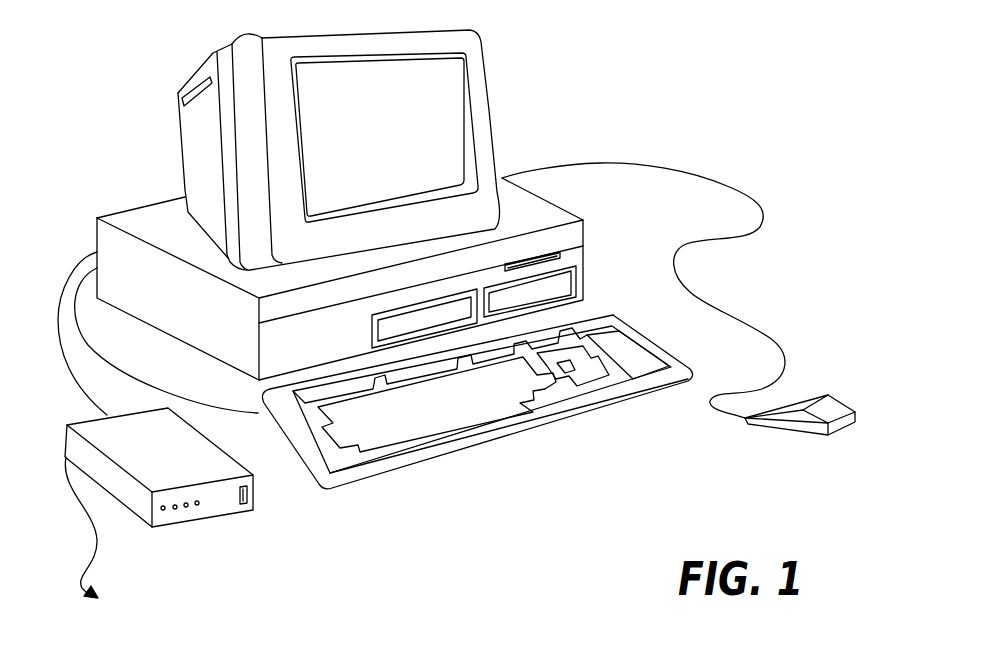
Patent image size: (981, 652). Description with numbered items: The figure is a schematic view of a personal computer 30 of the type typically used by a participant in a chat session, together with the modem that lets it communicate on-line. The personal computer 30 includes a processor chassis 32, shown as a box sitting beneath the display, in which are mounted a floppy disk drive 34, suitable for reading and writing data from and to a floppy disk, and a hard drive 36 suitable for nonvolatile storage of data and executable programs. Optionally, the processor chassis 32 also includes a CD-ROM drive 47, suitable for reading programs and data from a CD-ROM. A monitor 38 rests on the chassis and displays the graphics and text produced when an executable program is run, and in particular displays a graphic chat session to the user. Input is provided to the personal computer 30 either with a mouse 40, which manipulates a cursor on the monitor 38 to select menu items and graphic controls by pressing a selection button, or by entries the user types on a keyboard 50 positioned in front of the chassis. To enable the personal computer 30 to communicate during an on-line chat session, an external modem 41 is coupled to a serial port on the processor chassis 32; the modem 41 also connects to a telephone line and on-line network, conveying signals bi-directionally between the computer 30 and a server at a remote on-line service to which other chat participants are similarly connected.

The personal computer 30 is at (493, 463).
The processor chassis 32 is at (567, 257).
The floppy disk drive 34 is at (536, 256).
The hard drive 36 is at (552, 284).
The monitor 38 is at (487, 95).
The mouse 40 is at (828, 435).
The external modem 41 is at (217, 512).
The CD-ROM drive 47 is at (372, 333).
The keyboard 50 is at (578, 419).